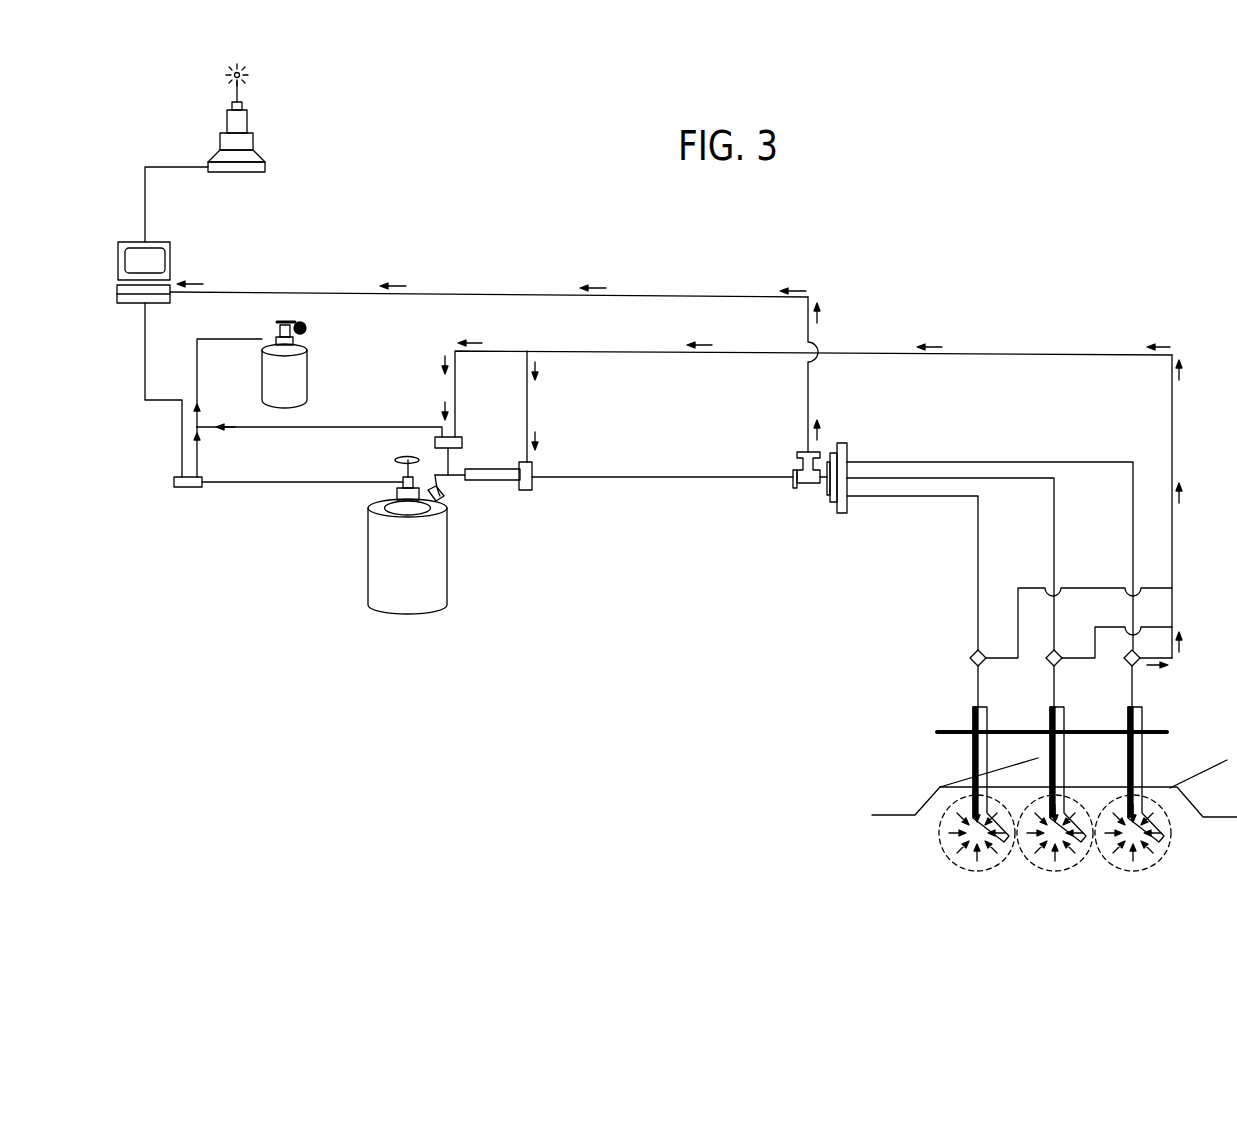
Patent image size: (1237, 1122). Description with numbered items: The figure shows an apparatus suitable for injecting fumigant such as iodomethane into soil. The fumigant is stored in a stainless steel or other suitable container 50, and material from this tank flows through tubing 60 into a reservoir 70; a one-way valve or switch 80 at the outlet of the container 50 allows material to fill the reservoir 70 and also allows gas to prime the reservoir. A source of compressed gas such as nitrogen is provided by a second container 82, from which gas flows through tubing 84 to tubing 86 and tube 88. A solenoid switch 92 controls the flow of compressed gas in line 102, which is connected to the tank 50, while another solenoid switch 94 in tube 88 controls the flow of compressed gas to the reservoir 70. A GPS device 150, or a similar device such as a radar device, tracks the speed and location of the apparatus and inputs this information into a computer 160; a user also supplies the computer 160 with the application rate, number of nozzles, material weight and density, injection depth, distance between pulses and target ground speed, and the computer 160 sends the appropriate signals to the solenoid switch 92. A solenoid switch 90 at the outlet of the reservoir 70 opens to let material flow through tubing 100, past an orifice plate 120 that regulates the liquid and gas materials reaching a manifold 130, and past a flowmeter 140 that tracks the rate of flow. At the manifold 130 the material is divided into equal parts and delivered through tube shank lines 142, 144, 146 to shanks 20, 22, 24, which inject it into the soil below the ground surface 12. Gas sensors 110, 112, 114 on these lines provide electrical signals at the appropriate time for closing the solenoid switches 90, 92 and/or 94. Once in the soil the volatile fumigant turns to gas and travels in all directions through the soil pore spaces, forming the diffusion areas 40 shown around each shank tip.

The ground surface 12 is at (1167, 788).
The shank 20 is at (973, 722).
The shank 22 is at (1050, 722).
The shank 24 is at (1128, 722).
The diffusion area 40 is at (1005, 860).
The container 50 is at (438, 560).
The tubing 60 is at (440, 480).
The reservoir 70 is at (495, 468).
The one-way valve 80 is at (442, 498).
The container 82 is at (307, 365).
The tubing 84 is at (197, 372).
The tubing 86 is at (197, 455).
The tube 88 is at (383, 427).
The solenoid switch 90 is at (535, 462).
The solenoid switch 92 is at (187, 487).
The solenoid switch 94 is at (435, 443).
The tubing 100 is at (680, 477).
The line 102 is at (287, 485).
The gas sensor 110 is at (972, 652).
The gas sensor 112 is at (1048, 652).
The gas sensor 114 is at (1127, 652).
The orifice plate 120 is at (795, 488).
The manifold 130 is at (832, 495).
The flowmeter 140 is at (820, 455).
The tube shank line 142 is at (980, 536).
The tube shank line 144 is at (1057, 536).
The tube shank line 146 is at (1133, 568).
The GPS device 150 is at (260, 155).
The computer 160 is at (170, 262).